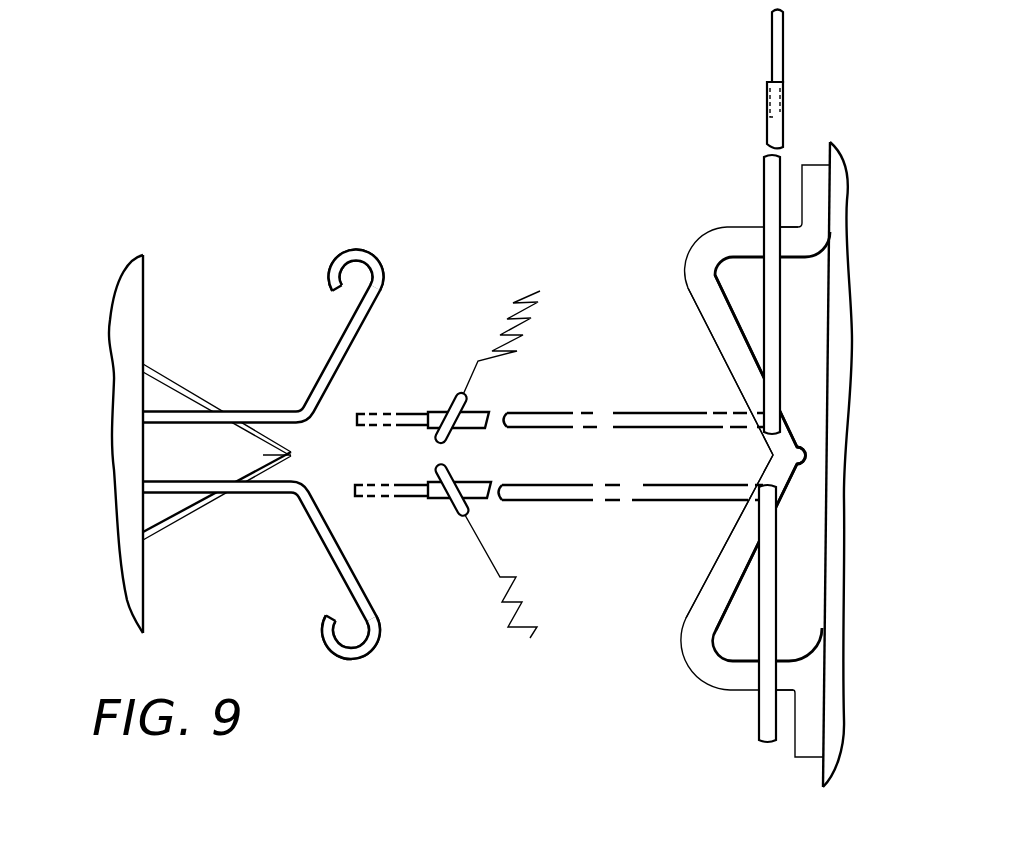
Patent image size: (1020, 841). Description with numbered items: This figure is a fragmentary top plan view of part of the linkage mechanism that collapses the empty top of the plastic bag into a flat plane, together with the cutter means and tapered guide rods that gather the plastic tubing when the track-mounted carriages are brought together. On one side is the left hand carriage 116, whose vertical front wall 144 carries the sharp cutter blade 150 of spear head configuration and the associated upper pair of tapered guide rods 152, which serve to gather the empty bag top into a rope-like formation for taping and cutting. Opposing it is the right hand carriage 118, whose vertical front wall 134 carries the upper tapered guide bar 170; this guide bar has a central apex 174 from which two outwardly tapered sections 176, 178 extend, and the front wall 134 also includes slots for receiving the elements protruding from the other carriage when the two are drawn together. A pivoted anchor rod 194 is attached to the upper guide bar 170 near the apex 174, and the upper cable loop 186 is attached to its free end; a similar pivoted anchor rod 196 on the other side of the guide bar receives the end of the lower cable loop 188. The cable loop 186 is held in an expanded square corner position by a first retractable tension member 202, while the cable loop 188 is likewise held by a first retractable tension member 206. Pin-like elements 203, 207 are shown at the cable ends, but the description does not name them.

The left hand carriage 116 is at (122, 437).
The vertical front wall 144 is at (145, 322).
The cutter blade 150 is at (290, 453).
The upper pair of tapered guide rods 152 is at (377, 265).
The upper cable loop 186 is at (773, 30).
The lower cable loop 188 is at (367, 498).
The pivoted anchor rod 194 is at (764, 180).
The pivoted anchor rod 196 is at (761, 715).
The upper tapered guide bar 170 is at (707, 250).
The central apex 174 is at (790, 457).
The outwardly tapered section 176 is at (728, 557).
The outwardly tapered section 178 is at (727, 350).
The vertical front wall 134 is at (822, 268).
The right hand carriage 118 is at (818, 394).
The first retractable tension member 202 is at (537, 292).
The pin 203 is at (468, 407).
The first retractable tension member 206 is at (518, 615).
The pin 207 is at (443, 465).